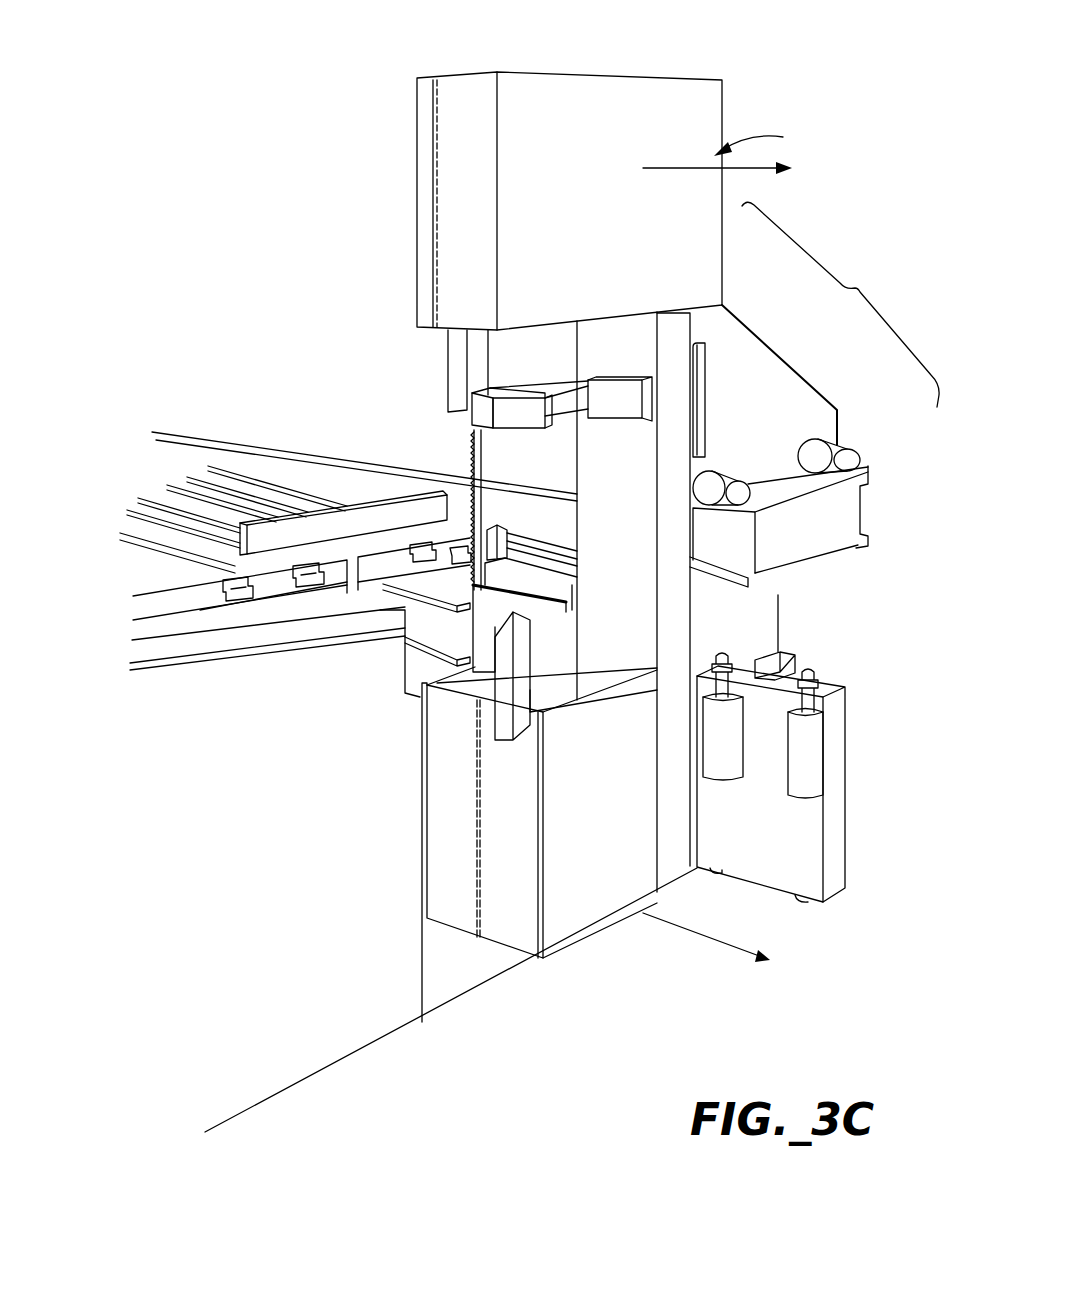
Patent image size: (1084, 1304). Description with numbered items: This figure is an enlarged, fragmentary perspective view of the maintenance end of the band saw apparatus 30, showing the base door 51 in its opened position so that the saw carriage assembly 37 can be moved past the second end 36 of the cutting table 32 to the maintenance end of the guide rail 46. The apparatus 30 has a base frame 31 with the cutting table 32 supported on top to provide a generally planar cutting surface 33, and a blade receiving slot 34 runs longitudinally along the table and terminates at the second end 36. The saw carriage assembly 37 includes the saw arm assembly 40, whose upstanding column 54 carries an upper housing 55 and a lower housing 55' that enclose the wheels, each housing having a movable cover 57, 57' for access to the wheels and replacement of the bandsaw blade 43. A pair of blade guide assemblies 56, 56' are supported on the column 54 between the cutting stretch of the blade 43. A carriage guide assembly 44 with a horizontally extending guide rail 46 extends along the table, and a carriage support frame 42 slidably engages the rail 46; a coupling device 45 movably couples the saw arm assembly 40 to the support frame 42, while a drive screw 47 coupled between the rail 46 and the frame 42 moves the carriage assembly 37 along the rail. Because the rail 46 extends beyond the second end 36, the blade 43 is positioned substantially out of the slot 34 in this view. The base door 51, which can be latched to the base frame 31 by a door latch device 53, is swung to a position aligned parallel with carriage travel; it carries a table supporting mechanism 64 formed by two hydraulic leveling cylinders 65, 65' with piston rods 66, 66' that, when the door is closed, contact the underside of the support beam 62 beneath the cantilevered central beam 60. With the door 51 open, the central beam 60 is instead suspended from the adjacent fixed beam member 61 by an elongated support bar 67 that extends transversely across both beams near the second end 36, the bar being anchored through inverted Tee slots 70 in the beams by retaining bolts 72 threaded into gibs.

The band saw apparatus 30 is at (276, 175).
The base frame 31 is at (247, 1093).
The cutting table 32 is at (216, 438).
The cutting surface 33 is at (203, 453).
The blade receiving slot 34 is at (345, 580).
The second end 36 is at (190, 610).
The saw carriage assembly 37 is at (840, 304).
The saw arm assembly 40 is at (730, 150).
The carriage support frame 42 is at (743, 320).
The bandsaw blade 43 is at (472, 448).
The carriage guide assembly 44 is at (838, 506).
The coupling device 45 is at (700, 420).
The guide rail 46 is at (848, 523).
The drive screw 47 is at (742, 482).
The base door 51 is at (832, 880).
The door latch device 53 is at (790, 648).
The upstanding column 54 is at (577, 336).
The upper housing 55 is at (592, 242).
The lower housing 55' is at (539, 851).
The blade guide assembly 56 is at (562, 394).
The blade guide assembly 56' is at (547, 676).
The movable cover 57 is at (379, 293).
The movable cover 57' is at (396, 875).
The central beam 60 is at (490, 545).
The fixed beam member 61 is at (183, 540).
The support beam 62 is at (532, 584).
The table supporting mechanism 64 is at (818, 810).
The hydraulic leveling cylinder 65 is at (842, 754).
The hydraulic leveling cylinder 65' is at (673, 741).
The piston rod 66 is at (839, 671).
The piston rod 66' is at (772, 639).
The support bar 67 is at (266, 546).
The inverted Tee slot 70 is at (300, 588).
The retaining bolt 72 is at (420, 497).